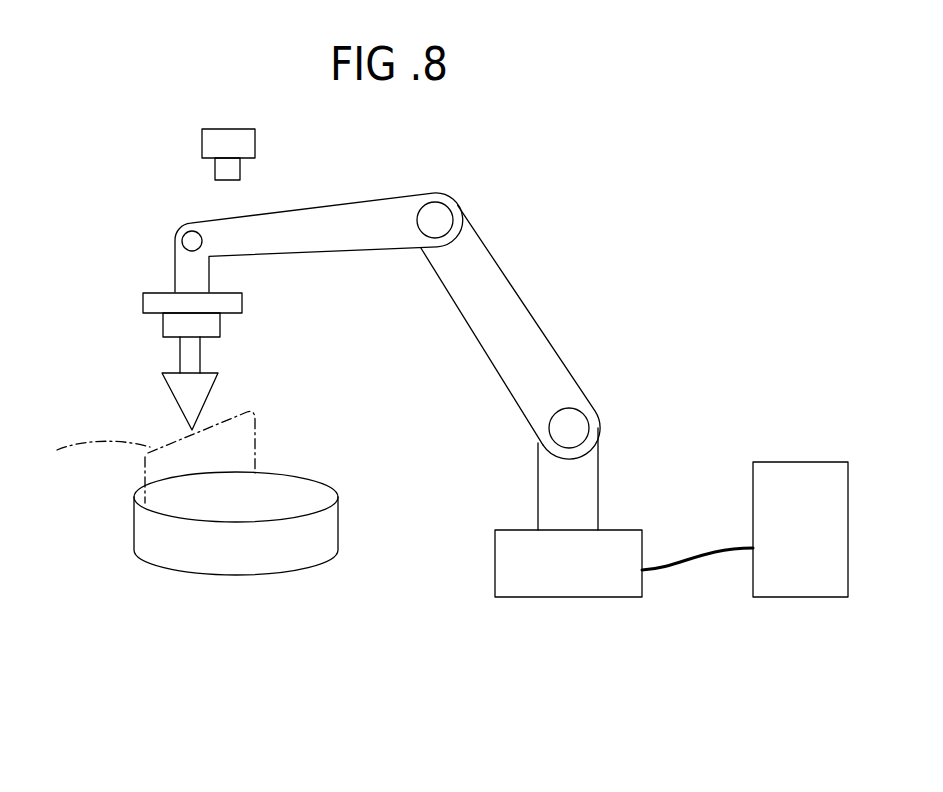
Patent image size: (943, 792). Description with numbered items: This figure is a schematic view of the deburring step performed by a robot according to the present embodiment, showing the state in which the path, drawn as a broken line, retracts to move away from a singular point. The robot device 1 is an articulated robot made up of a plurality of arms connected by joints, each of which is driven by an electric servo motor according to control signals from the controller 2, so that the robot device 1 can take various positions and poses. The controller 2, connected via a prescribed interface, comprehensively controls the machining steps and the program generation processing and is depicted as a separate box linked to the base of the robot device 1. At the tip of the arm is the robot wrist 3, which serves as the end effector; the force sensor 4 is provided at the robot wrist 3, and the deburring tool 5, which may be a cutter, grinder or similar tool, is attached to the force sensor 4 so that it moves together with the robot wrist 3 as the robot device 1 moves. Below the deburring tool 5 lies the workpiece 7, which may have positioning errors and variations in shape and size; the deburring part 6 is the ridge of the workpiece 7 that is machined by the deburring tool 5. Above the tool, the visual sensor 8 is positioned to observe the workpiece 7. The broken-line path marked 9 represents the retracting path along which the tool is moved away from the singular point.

The robot device 1 is at (507, 303).
The controller 2 is at (784, 467).
The robot wrist 3 is at (143, 303).
The force sensor 4 is at (167, 328).
The deburring tool 5 is at (172, 393).
The deburring part 6 is at (135, 490).
The workpiece 7 is at (148, 547).
The visual sensor 8 is at (207, 143).
The processing path 9 is at (146, 457).